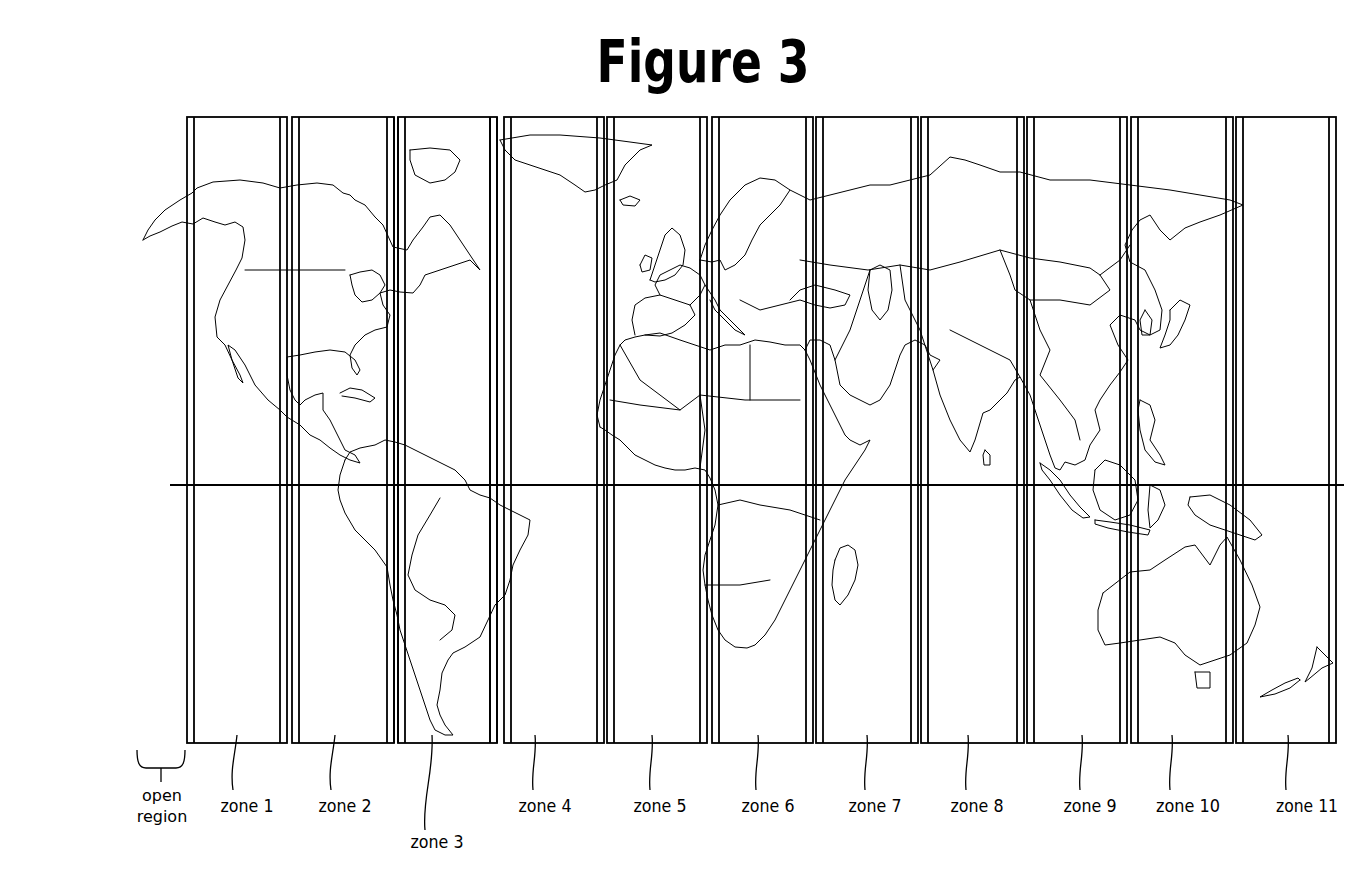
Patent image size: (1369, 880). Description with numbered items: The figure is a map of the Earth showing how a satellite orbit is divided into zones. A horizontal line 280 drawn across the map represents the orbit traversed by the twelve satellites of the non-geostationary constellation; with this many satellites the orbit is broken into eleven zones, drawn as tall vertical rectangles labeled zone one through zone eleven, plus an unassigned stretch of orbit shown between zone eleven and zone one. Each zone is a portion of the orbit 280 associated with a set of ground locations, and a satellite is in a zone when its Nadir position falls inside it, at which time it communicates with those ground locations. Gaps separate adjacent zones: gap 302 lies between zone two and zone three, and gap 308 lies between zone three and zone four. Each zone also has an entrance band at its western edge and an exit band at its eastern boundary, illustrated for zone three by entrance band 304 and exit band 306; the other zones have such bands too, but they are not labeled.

The orbit line 280 is at (219, 487).
The gap 302 is at (396, 744).
The entrance band 304 is at (399, 744).
The exit band 306 is at (493, 742).
The gap 308 is at (496, 744).